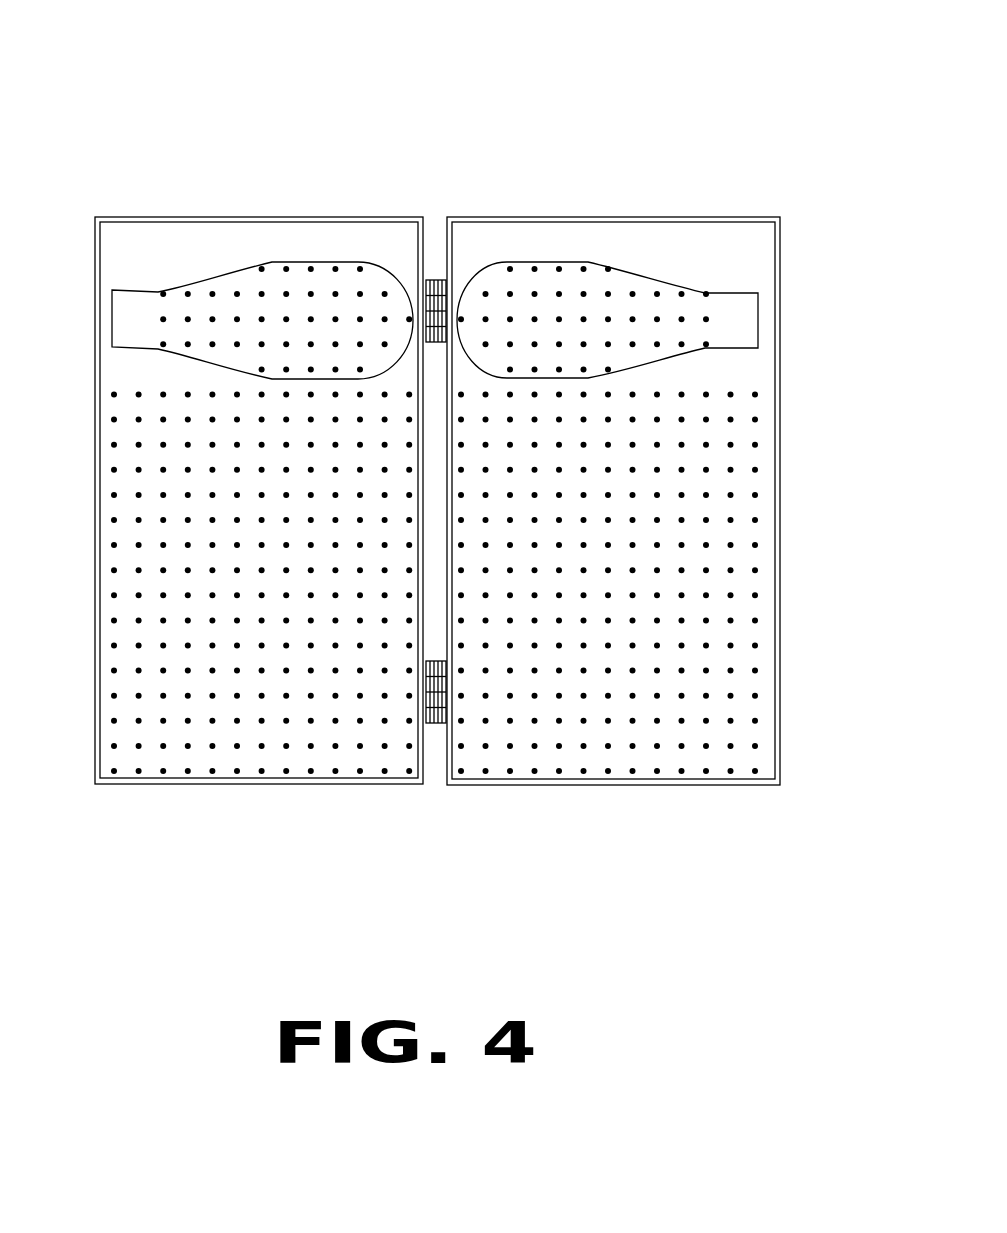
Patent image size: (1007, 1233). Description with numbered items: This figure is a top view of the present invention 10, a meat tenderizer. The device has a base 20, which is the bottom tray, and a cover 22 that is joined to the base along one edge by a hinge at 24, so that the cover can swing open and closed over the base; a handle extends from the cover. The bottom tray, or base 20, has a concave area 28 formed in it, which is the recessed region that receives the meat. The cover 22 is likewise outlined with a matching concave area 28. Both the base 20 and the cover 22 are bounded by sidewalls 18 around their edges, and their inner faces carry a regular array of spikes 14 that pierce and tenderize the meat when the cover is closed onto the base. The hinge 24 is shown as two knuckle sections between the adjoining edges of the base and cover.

The present invention 10 is at (165, 100).
The spikes 14 is at (732, 393).
The sidewalls 18 is at (283, 227).
The base 20 is at (133, 225).
The cover 22 is at (607, 784).
The hinge 24 is at (432, 280).
The concave area 28 is at (326, 262).